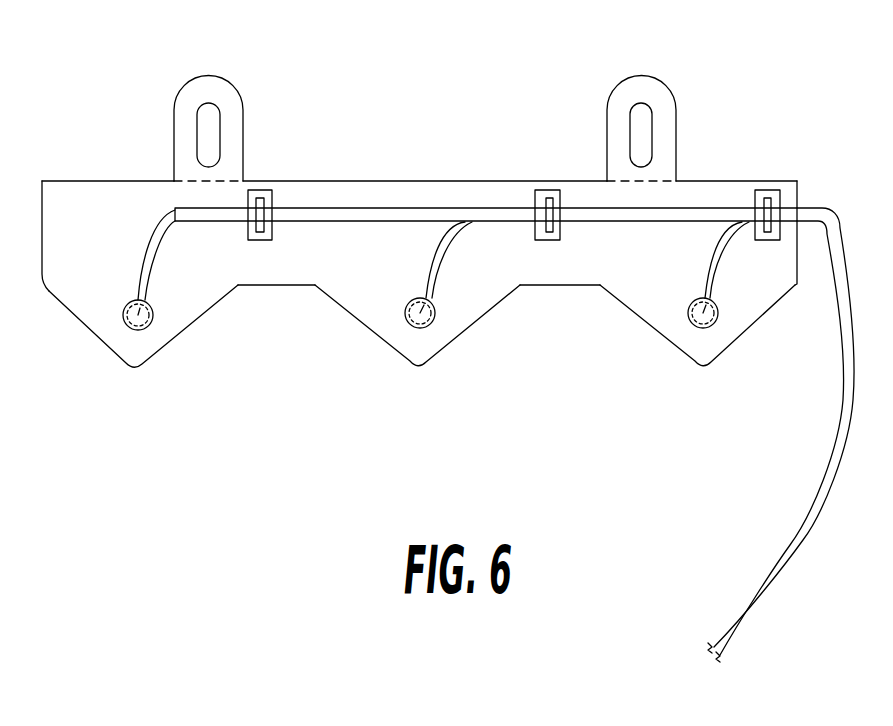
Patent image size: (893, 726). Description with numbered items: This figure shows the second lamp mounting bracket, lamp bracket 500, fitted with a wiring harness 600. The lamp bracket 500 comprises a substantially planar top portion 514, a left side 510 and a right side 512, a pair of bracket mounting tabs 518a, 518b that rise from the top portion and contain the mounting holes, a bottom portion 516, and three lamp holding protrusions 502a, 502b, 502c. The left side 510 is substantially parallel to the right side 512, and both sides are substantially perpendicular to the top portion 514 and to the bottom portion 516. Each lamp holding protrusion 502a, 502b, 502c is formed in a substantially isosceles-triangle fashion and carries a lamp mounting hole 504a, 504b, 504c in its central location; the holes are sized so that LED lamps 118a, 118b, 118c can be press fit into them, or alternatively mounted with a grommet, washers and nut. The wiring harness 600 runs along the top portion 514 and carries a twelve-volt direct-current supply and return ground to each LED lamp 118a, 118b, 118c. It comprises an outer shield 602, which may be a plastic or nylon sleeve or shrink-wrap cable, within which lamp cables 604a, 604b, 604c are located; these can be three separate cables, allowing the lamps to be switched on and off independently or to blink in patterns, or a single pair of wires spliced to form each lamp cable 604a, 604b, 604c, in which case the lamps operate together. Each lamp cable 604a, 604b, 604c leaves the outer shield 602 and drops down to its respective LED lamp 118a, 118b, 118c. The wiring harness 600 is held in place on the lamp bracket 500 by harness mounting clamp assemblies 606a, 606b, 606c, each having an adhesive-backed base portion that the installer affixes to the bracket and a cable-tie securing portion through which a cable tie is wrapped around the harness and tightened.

The lamp bracket 500 is at (692, 141).
The left side 510 is at (42, 210).
The right side 512 is at (797, 181).
The top portion 514 is at (397, 181).
The bottom portion 516 is at (287, 287).
The bracket mounting tab 518a is at (218, 74).
The bracket mounting tab 518b is at (613, 98).
The lamp holding protrusion 502a is at (175, 344).
The lamp holding protrusion 502b is at (457, 350).
The lamp holding protrusion 502c is at (717, 360).
The lamp mounting hole 504a is at (153, 326).
The lamp mounting hole 504b is at (433, 323).
The lamp mounting hole 504c is at (692, 317).
The LED lamp 118a is at (128, 299).
The LED lamp 118b is at (423, 330).
The LED lamp 118c is at (704, 330).
The wiring harness 600 is at (735, 628).
The outer shield 602 is at (282, 206).
The lamp cable 604a is at (150, 238).
The lamp cable 604b is at (425, 246).
The lamp cable 604c is at (708, 250).
The harness mounting clamp assembly 606a is at (250, 190).
The harness mounting clamp assembly 606b is at (538, 190).
The harness mounting clamp assembly 606c is at (760, 241).